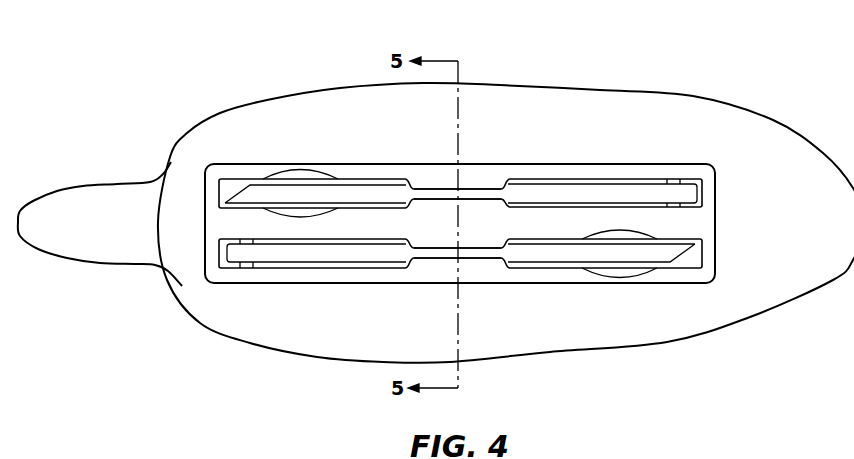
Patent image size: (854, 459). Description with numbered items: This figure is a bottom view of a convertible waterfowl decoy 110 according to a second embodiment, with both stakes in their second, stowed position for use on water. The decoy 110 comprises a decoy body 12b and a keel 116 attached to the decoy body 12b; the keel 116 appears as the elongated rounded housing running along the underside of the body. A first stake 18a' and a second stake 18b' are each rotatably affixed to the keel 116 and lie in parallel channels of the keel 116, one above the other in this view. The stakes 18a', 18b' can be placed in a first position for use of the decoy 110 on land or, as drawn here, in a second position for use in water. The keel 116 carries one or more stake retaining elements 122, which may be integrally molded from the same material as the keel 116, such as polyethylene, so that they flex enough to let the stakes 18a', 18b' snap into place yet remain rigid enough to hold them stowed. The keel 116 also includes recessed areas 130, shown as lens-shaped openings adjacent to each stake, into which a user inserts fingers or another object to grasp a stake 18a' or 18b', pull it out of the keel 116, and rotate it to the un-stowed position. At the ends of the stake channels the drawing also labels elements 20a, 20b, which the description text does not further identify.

The decoy 110 is at (322, 56).
The decoy body 12b is at (258, 100).
The recessed areas 130 is at (283, 176).
The stake retaining elements 122 is at (486, 188).
The first stake 18a' is at (460, 122).
The second stake 18b' is at (460, 324).
The keel 116 is at (662, 163).
The upper blade holder 20a is at (675, 183).
The lower blade holder 20b is at (247, 268).